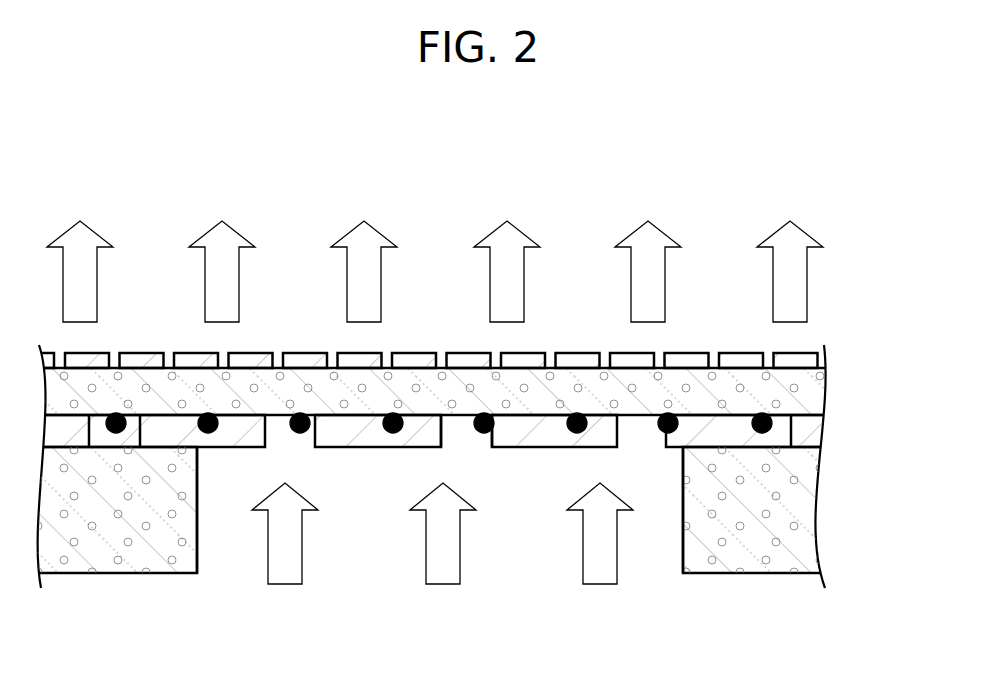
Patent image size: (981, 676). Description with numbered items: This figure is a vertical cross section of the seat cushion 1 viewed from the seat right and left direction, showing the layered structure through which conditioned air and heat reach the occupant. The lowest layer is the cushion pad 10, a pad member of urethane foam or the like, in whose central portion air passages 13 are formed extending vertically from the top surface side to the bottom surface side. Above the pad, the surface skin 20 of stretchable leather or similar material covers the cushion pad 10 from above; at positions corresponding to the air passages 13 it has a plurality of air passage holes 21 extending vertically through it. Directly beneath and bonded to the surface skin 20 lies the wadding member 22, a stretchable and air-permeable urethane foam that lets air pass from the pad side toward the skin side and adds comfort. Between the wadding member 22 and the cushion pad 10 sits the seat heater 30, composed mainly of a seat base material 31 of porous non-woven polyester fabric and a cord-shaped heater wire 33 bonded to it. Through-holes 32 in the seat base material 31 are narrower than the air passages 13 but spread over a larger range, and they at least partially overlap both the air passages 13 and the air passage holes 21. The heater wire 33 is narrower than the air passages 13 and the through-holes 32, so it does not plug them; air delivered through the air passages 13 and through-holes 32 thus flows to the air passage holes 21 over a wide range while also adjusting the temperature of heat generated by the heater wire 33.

The seat cushion 1 is at (204, 185).
The cushion pad 10 is at (798, 533).
The air passages 13 is at (360, 552).
The surface skin 20 is at (452, 311).
The air passage holes 21 is at (549, 352).
The wadding member 22 is at (812, 400).
The seat heater 30 is at (479, 528).
The seat base material 31 is at (743, 438).
The through-holes 32 is at (468, 446).
The heater wire 33 is at (773, 423).